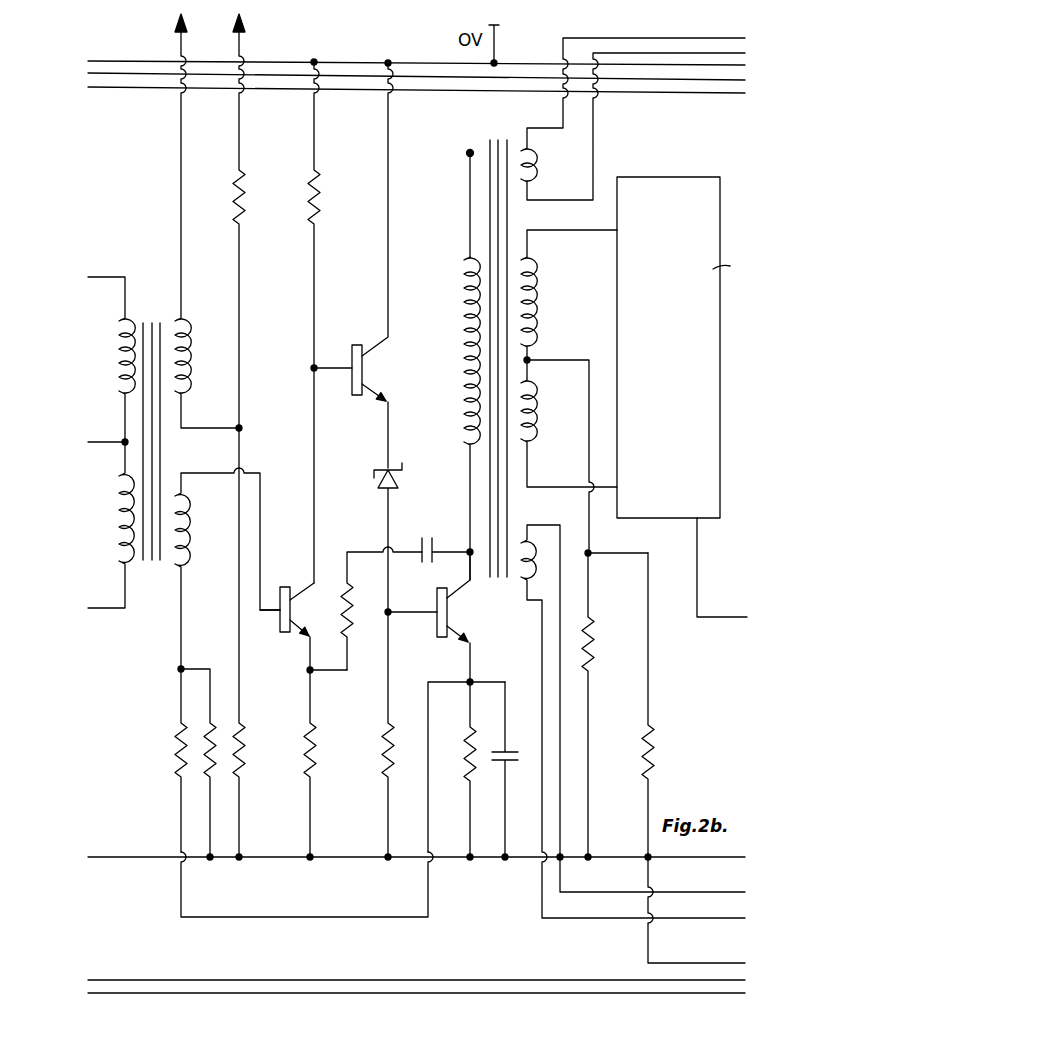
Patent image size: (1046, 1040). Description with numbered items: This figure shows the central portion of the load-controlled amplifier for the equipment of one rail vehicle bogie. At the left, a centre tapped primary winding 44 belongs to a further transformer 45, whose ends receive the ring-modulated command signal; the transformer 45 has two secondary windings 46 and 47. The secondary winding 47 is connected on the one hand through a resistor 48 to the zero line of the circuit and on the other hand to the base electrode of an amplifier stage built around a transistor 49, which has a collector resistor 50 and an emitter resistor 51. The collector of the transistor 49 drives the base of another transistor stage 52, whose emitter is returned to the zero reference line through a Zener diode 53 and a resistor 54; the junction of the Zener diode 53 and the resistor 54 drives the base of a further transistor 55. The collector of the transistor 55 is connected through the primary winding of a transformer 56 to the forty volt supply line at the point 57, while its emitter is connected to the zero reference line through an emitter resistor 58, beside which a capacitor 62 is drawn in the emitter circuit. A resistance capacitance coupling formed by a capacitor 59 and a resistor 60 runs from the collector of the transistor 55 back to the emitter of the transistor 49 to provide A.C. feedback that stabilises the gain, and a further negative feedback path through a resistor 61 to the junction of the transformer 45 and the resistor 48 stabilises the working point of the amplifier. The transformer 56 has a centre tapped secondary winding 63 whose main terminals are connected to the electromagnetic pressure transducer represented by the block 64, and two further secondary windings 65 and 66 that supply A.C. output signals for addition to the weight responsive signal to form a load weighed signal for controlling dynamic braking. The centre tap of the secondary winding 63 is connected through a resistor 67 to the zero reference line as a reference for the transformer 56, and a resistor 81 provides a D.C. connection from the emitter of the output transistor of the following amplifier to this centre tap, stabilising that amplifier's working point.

The centre tapped primary winding 44 is at (115, 533).
The further transformer 45 is at (151, 456).
The secondary winding 46 is at (193, 374).
The secondary winding 47 is at (193, 543).
The resistor 48 is at (200, 744).
The transistor 49 is at (297, 566).
The collector resistor 50 is at (323, 218).
The emitter resistor 51 is at (313, 755).
The transistor stage 52 is at (370, 372).
The Zener diode 53 is at (400, 483).
The resistor 54 is at (402, 754).
The transistor 55 is at (458, 618).
The transformer 56 is at (485, 371).
The point 57 is at (464, 158).
The emitter resistor 58 is at (455, 760).
The capacitor 59 is at (431, 534).
The resistor 60 is at (356, 618).
The resistor 61 is at (173, 738).
The capacitor 62 is at (507, 748).
The centre tapped secondary winding 63 is at (529, 358).
The electromagnetic pressure transducer 64 is at (680, 351).
The secondary winding 65 is at (538, 168).
The secondary winding 66 is at (533, 566).
The resistor 67 is at (597, 647).
The resistor 81 is at (664, 748).